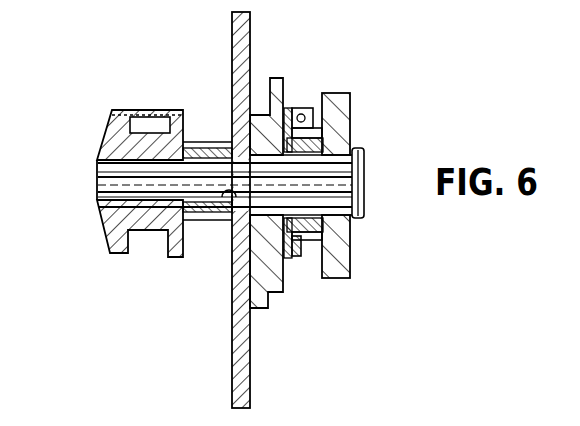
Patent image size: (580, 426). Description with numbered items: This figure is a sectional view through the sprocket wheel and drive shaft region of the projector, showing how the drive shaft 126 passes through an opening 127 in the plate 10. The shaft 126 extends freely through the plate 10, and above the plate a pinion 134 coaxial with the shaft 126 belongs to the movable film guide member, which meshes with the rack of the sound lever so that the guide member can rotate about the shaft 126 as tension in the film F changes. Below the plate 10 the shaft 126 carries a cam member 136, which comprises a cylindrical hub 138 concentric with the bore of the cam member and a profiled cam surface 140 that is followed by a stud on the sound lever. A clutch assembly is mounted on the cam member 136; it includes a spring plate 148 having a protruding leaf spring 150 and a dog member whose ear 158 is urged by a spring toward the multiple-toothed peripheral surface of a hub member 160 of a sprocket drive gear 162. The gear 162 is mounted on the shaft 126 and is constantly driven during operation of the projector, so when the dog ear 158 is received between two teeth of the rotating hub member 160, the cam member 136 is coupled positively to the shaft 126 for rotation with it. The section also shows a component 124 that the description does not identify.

The plate 10 is at (235, 57).
The adjusting nut 124 is at (100, 143).
The shaft 126 is at (98, 177).
The opening 127 is at (225, 205).
The pinion 134 is at (205, 140).
The cam member 136 is at (279, 297).
The cylindrical hub 138 is at (276, 77).
The profiled cam surface 140 is at (259, 312).
The spring plate 148 is at (292, 108).
The leaf spring 150 is at (296, 257).
The dog ear 158 is at (305, 108).
The hub member 160 is at (305, 136).
The sprocket drive gear 162 is at (338, 110).
The film f is at (143, 114).